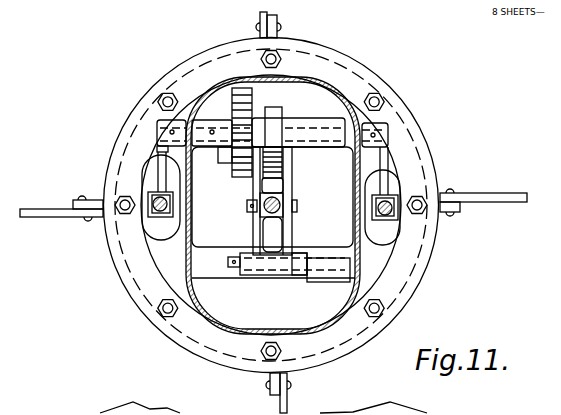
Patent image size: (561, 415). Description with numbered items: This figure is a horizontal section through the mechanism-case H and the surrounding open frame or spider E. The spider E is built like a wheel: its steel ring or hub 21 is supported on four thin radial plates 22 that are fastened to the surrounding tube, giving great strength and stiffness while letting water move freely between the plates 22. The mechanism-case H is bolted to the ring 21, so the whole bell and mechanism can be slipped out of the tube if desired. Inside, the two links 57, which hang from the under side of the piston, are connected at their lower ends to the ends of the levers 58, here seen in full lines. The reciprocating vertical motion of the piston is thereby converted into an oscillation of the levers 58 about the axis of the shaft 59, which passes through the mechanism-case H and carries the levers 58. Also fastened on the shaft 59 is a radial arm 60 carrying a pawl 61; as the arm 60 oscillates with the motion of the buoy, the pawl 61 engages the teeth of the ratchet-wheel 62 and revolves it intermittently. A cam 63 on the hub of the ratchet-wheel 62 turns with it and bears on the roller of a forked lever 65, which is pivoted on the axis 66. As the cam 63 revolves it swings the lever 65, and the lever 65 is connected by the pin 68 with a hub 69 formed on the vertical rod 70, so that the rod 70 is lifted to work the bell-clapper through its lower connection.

The steel ring or hub 21 is at (433, 241).
The radial plates 22 is at (505, 203).
The links 57 is at (271, 200).
The levers 58 is at (156, 126).
The shaft 59 is at (308, 128).
The radial arm 60 is at (218, 153).
The pawl 61 is at (248, 167).
The ratchet-wheel 62 is at (237, 97).
The cam 63 is at (278, 112).
The forked lever 65 is at (285, 182).
The axis 66 is at (275, 158).
The pin 68 is at (280, 203).
The hub 69 is at (272, 234).
The vertical rod 70 is at (278, 211).
The open frame or spider E is at (432, 172).
The mechanism-case H is at (358, 250).